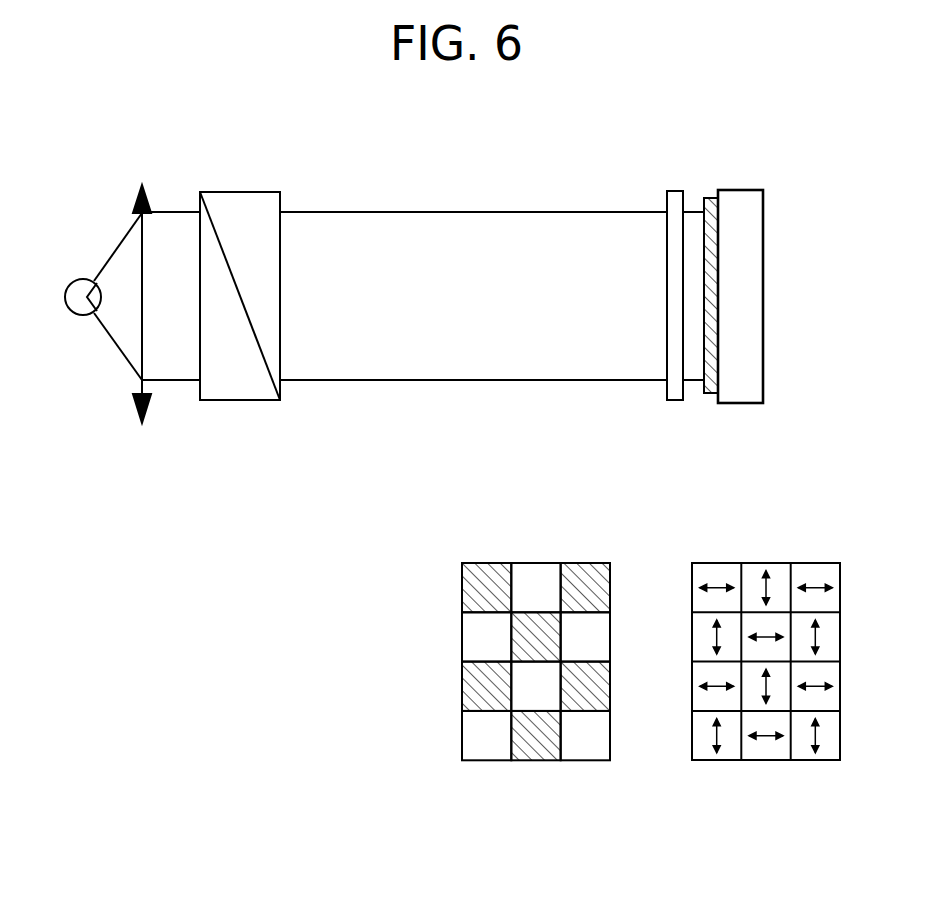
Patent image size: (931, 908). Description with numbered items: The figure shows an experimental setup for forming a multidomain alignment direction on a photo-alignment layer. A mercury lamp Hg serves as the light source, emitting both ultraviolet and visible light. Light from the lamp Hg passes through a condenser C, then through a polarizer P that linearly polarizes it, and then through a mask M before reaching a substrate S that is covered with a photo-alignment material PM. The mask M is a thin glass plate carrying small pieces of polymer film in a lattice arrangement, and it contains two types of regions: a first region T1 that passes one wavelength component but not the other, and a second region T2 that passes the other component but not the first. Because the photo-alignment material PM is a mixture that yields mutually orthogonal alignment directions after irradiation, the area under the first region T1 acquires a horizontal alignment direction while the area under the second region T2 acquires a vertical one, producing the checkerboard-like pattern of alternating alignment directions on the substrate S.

The mercury lamp Hg is at (103, 305).
The condenser C is at (145, 335).
The polarizer P is at (240, 339).
The mask M is at (543, 535).
The photo-alignment material PM is at (762, 543).
The substrate S is at (758, 305).
The first region T1 is at (516, 587).
The second region T2 is at (516, 636).